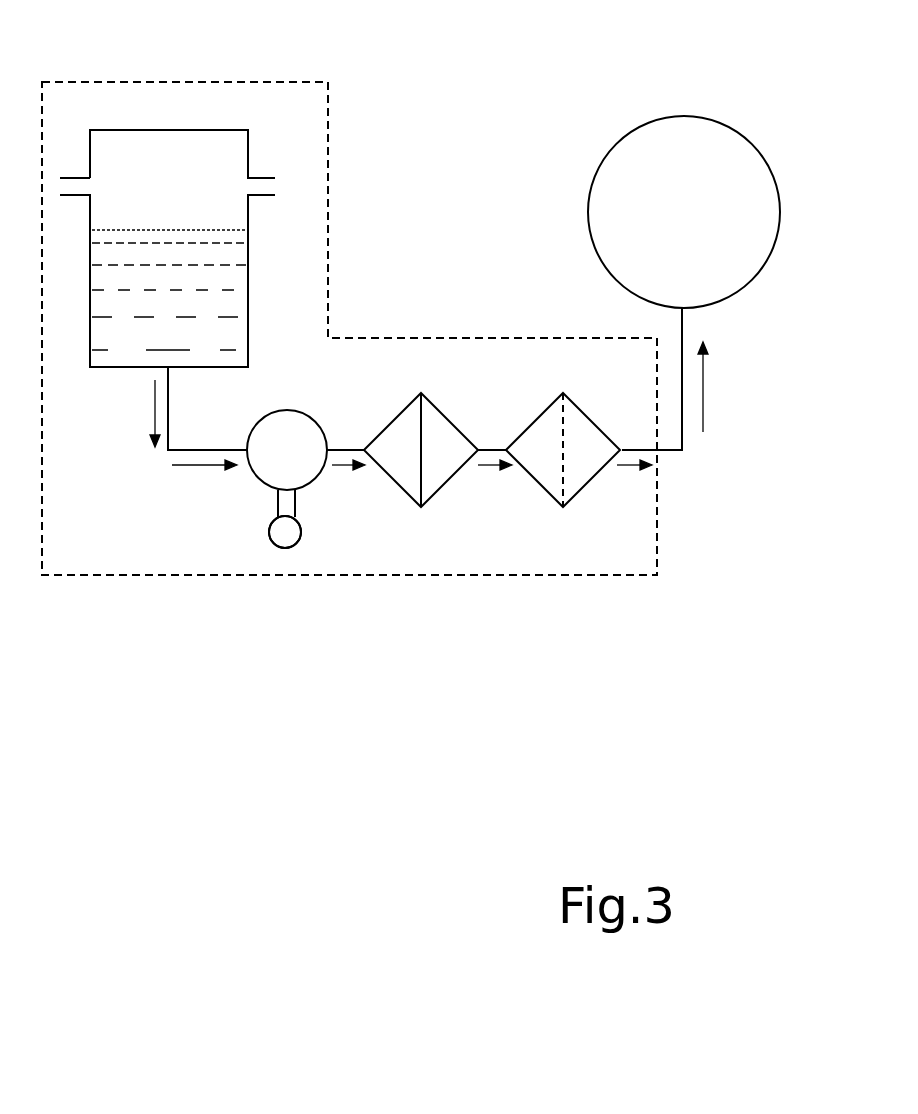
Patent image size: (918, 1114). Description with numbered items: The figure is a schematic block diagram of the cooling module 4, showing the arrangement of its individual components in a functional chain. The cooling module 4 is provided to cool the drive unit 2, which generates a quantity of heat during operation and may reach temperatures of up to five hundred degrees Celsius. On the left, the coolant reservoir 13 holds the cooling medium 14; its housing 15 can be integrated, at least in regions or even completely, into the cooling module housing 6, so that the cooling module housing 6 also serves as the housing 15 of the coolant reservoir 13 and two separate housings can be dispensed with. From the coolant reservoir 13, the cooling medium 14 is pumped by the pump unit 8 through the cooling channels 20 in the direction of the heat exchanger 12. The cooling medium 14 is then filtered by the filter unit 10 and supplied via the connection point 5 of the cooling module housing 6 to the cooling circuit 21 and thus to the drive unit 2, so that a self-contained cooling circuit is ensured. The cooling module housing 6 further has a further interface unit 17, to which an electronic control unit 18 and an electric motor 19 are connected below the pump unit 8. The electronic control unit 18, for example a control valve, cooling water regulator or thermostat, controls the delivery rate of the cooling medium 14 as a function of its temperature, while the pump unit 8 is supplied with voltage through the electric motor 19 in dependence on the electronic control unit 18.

The coolant reservoir 13 is at (192, 116).
The housing of the coolant reservoir 15 is at (248, 213).
The cooling medium 14 is at (233, 308).
The cooling channels 20 is at (210, 450).
The pump unit 8 is at (245, 468).
The further interface unit 17 is at (296, 500).
The electric motor 19 is at (268, 537).
The electronic control unit 18 is at (281, 566).
The heat exchanger 12 is at (405, 485).
The filter unit 10 is at (578, 492).
The cooling module housing 6 is at (488, 575).
The connection point 5 is at (682, 475).
The cooling circuit 21 is at (730, 314).
The drive unit 2 is at (657, 117).
The cooling module 4 is at (618, 765).